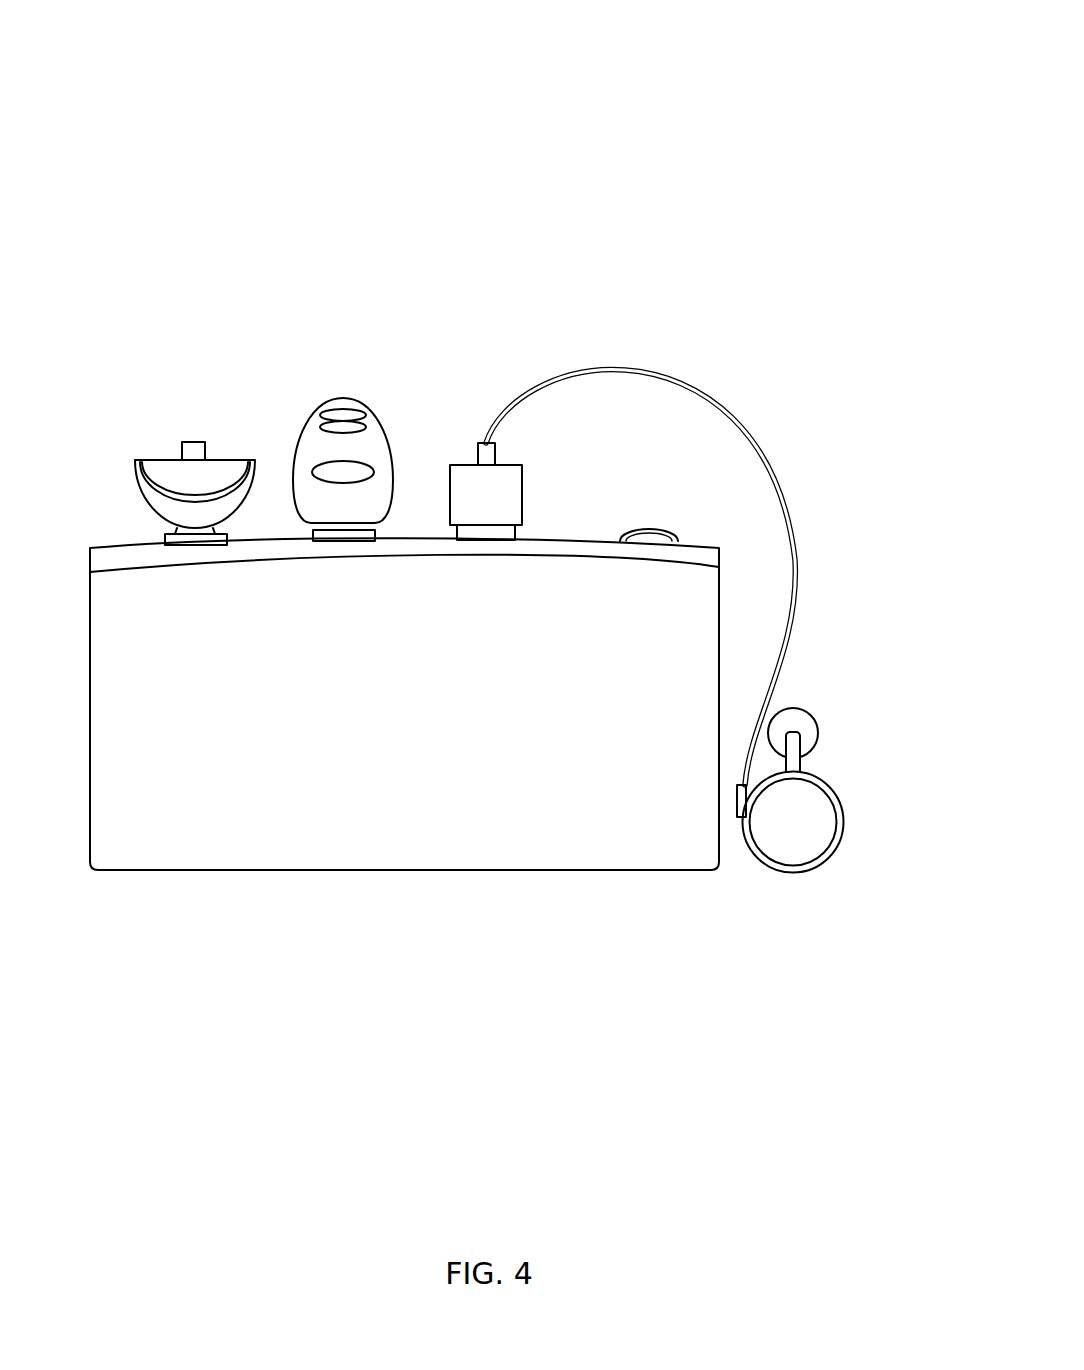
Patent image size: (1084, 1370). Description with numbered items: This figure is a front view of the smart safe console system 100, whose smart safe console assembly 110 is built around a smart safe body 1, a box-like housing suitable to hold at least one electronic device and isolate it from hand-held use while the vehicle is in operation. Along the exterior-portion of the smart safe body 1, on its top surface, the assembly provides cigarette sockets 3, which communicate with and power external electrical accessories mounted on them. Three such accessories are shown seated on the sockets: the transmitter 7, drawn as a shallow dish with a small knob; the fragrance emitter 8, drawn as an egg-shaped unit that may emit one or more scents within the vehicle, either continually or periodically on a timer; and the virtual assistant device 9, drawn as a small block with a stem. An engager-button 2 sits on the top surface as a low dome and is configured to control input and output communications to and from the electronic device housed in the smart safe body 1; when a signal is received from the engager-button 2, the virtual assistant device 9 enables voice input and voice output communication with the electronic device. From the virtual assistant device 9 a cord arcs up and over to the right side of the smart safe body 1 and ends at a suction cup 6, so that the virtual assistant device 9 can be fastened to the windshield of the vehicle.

The smart safe body 1 is at (404, 748).
The engager-button 2 is at (721, 446).
The cigarette socket 3 is at (277, 443).
The suction cup 6 is at (665, 675).
The transmitter 7 is at (167, 430).
The fragrance emitter 8 is at (317, 401).
The virtual assistant device 9 is at (478, 422).
The smart safe console system 100 is at (843, 53).
The smart safe console assembly 110 is at (843, 88).